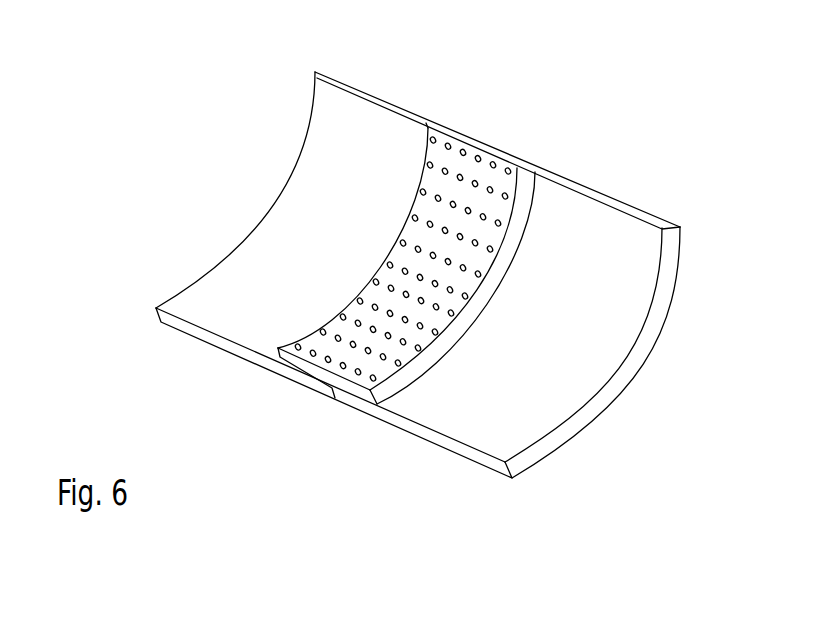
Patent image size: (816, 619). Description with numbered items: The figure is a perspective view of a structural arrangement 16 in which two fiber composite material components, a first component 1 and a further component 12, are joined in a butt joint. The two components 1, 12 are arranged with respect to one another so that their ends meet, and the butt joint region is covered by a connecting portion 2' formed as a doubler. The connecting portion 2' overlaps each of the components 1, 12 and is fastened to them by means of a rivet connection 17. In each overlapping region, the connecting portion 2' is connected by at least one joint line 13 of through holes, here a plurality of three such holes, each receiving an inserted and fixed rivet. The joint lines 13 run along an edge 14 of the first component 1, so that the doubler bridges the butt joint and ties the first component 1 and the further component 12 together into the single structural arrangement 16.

The first component 1 is at (367, 125).
The connecting portion 2' is at (407, 240).
The further component 12 is at (593, 227).
The joint line 13 is at (324, 363).
The edge 14 is at (335, 408).
The structural arrangement 16 is at (400, 245).
The rivet connection 17 is at (483, 125).